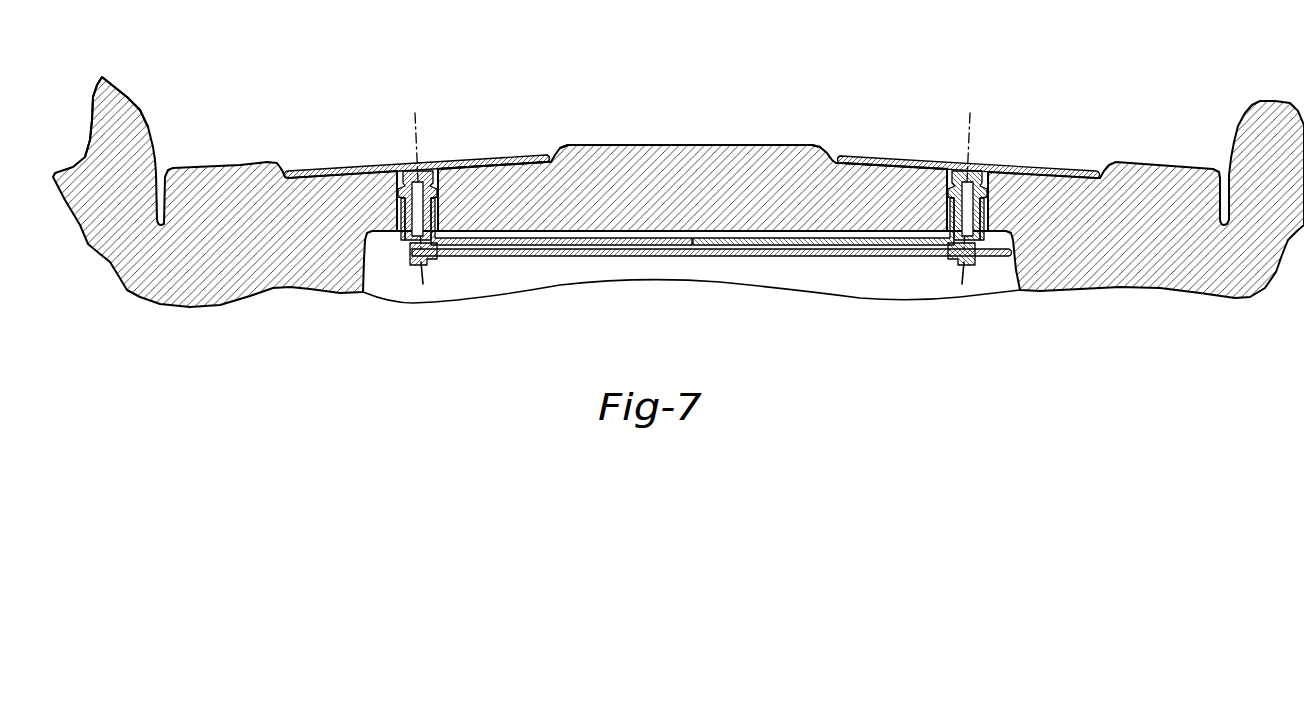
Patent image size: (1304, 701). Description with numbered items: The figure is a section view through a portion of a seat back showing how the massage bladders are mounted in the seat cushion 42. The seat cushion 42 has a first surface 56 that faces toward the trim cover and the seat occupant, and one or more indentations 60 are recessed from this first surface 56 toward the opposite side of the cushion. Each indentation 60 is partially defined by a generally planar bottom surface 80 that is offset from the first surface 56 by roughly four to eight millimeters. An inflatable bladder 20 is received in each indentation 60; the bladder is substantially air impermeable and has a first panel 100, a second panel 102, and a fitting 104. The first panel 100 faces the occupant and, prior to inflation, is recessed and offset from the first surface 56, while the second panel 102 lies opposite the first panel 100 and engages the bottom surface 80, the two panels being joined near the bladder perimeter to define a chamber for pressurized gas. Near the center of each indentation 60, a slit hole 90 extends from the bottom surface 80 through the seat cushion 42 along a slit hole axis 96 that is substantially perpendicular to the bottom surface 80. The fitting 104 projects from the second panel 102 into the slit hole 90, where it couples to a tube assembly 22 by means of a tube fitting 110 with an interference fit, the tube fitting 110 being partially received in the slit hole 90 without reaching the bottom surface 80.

The inflatable bladder 20 is at (492, 158).
The tube assembly 22 is at (748, 258).
The seat cushion 42 is at (118, 92).
The first surface 56 is at (707, 143).
The indentation 60 is at (528, 146).
The bottom surface 80 is at (488, 168).
The slit hole 90 is at (400, 184).
The slit hole axis 96 is at (424, 281).
The first panel 100 is at (472, 160).
The second panel 102 is at (404, 170).
The fitting 104 is at (440, 197).
The tube fitting 110 is at (413, 247).